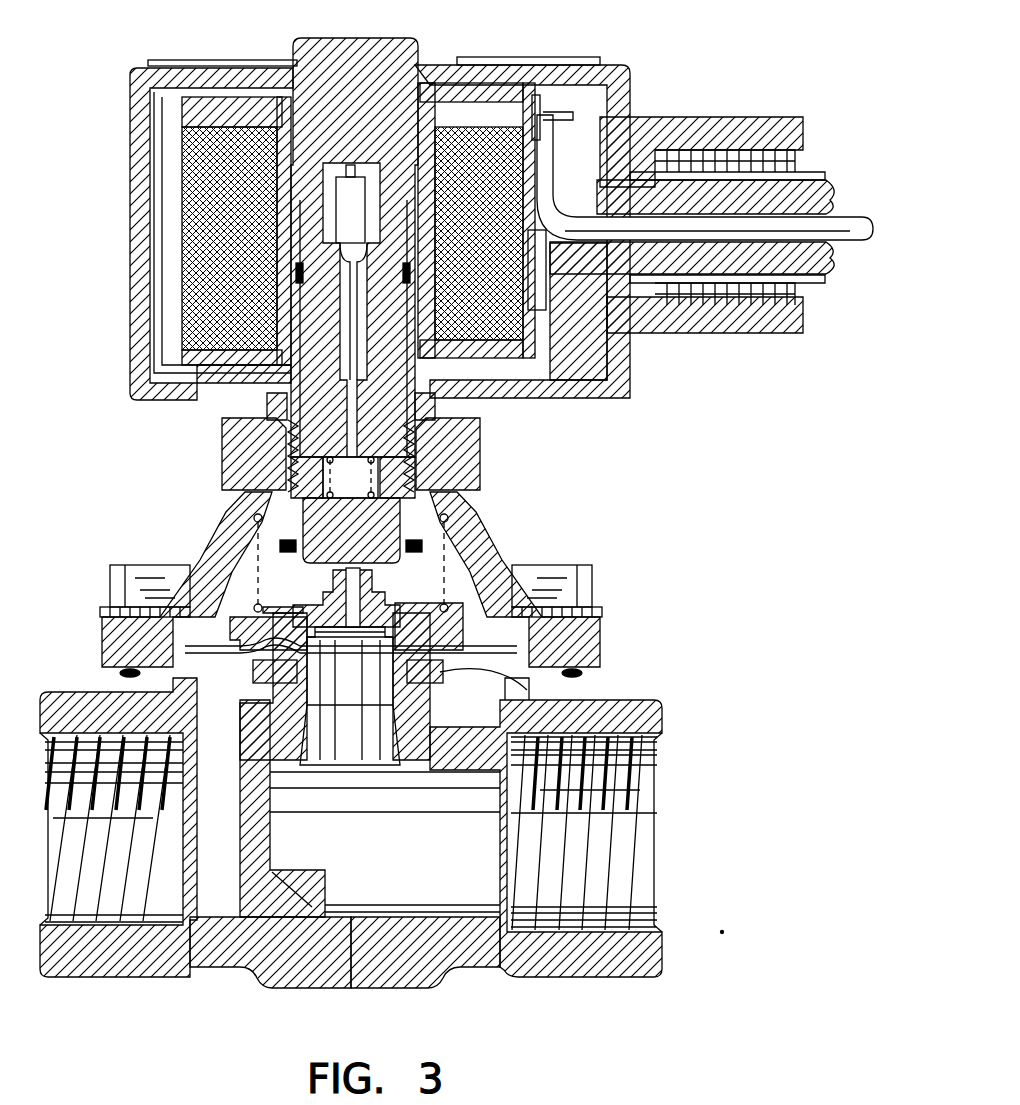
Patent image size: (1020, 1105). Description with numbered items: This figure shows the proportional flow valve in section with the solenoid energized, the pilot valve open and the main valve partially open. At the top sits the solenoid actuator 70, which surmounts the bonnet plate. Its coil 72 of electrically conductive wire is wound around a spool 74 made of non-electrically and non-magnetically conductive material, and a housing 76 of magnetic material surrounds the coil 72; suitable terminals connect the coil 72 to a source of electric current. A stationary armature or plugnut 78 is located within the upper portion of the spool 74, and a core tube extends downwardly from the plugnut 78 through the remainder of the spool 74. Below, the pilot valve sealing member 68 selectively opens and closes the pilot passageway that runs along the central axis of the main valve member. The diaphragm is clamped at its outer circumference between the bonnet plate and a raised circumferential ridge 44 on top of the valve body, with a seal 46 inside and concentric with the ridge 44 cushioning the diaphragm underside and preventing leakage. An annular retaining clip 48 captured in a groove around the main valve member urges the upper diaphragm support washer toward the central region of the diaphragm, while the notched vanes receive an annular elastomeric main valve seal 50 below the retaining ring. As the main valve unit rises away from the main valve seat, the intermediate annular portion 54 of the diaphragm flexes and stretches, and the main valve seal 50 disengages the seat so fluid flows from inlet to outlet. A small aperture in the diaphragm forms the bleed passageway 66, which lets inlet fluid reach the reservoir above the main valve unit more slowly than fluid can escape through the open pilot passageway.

The raised circumferential ridge 44 is at (106, 680).
The seal 46 is at (598, 673).
The annular retaining clip 48 is at (414, 612).
The main valve seal 50 is at (440, 679).
The intermediate annular portion 54 is at (520, 650).
The bleed passageway 66 is at (190, 650).
The pilot valve sealing member 68 is at (256, 520).
The solenoid actuator 70 is at (238, 63).
The coil 72 is at (187, 303).
The spool 74 is at (187, 118).
The housing 76 is at (619, 79).
The stationary armature or plugnut 78 is at (356, 43).